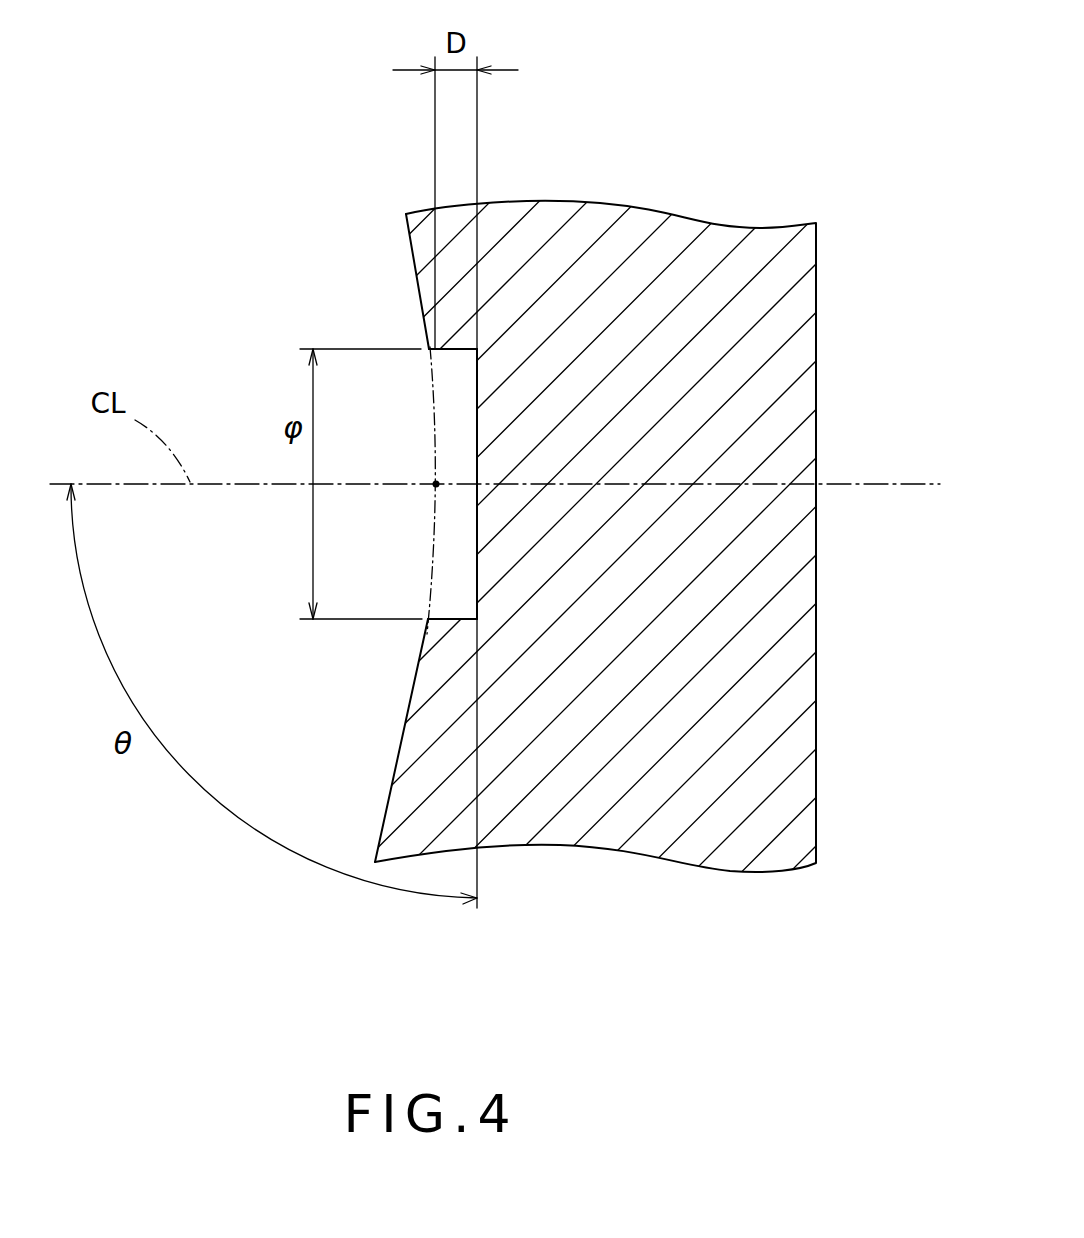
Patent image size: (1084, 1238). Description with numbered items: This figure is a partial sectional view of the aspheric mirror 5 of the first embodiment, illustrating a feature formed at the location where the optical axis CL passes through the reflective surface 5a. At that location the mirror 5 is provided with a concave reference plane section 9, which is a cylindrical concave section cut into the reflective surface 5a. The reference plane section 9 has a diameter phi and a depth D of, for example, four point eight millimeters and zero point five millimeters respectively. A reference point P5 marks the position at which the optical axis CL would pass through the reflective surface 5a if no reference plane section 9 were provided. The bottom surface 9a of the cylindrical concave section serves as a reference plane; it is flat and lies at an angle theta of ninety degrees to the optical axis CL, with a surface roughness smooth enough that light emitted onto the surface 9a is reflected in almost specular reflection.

The aspheric mirror 5 is at (816, 299).
The reflective surface 5a is at (404, 745).
The reference plane section 9 is at (418, 393).
The bottom surface (reference plane) 9a is at (477, 543).
The reference point P5 is at (436, 484).